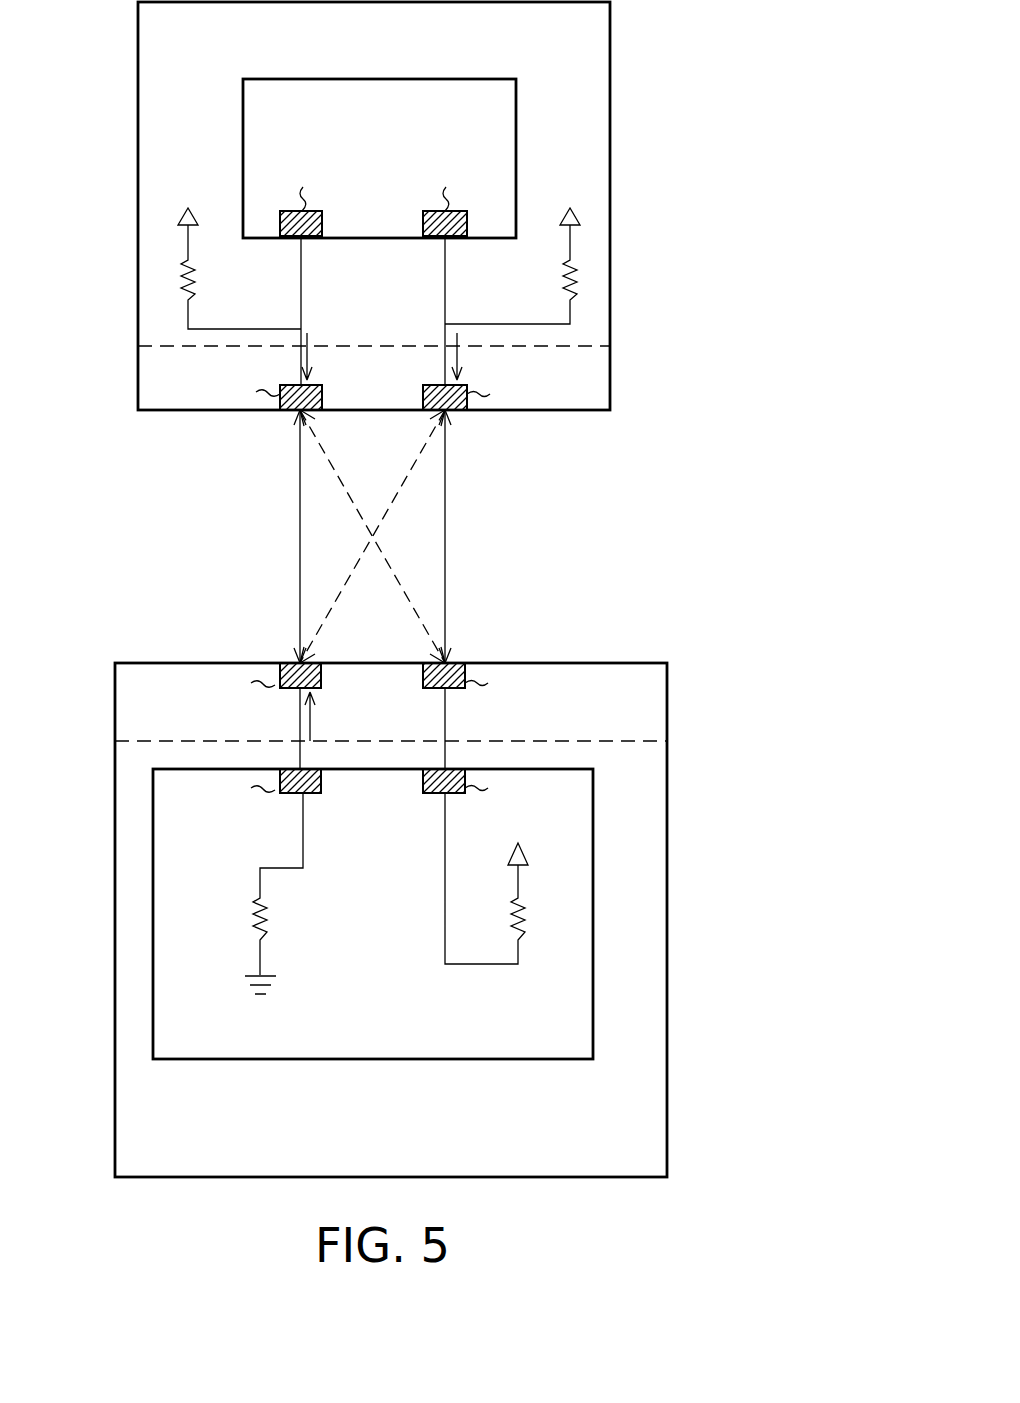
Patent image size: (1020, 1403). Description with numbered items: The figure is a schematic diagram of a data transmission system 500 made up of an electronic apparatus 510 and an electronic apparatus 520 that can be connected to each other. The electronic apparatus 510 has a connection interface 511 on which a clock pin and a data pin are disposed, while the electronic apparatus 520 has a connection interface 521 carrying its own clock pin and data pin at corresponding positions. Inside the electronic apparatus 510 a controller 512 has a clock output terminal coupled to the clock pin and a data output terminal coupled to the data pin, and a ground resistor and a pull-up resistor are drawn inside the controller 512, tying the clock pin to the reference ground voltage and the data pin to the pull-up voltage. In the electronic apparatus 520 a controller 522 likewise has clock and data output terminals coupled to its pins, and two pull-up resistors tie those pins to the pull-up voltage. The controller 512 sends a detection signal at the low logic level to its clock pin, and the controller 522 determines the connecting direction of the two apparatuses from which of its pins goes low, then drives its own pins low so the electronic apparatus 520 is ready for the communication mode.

The data transmission system 500 is at (791, 1223).
The electronic apparatus 510 is at (668, 1015).
The connection interface 511 is at (668, 702).
The controller 512 is at (593, 890).
The electronic apparatus 520 is at (610, 150).
The connection interface 521 is at (610, 385).
The controller 522 is at (430, 79).